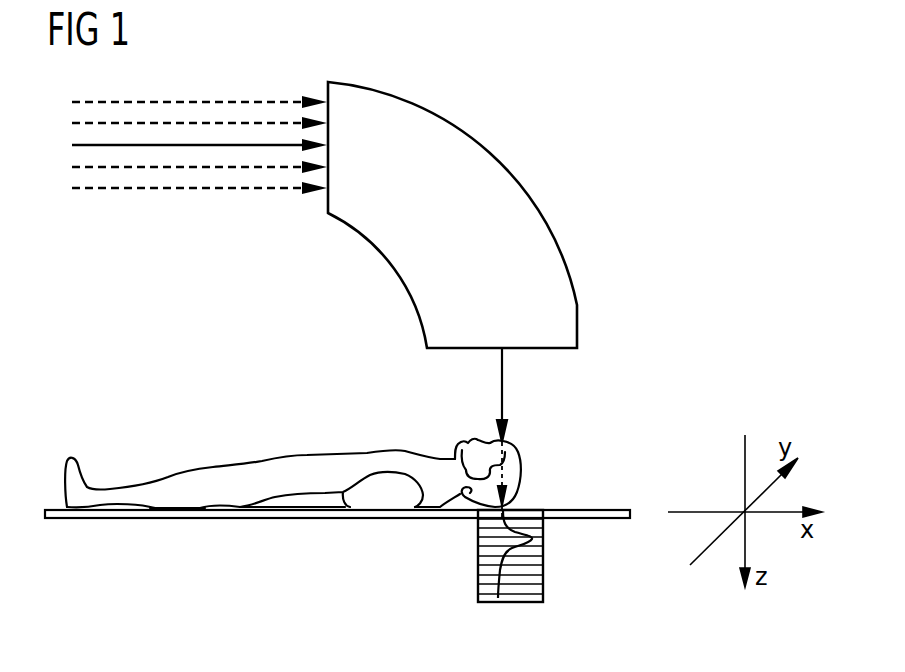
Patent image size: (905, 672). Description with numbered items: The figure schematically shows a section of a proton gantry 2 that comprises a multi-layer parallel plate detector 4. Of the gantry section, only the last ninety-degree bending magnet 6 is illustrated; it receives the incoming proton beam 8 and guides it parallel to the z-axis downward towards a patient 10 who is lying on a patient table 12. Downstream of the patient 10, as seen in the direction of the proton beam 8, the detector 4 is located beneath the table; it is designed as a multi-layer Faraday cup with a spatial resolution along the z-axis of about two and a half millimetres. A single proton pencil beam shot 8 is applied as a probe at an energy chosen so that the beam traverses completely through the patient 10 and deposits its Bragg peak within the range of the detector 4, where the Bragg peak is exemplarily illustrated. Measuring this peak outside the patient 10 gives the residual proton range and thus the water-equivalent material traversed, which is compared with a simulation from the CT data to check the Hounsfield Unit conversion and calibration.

The proton gantry 2 is at (704, 167).
The multi-layer parallel plate detector 4 is at (530, 556).
The last 90° bending magnet 6 is at (567, 321).
The proton beam 8 is at (207, 145).
The patient 10 is at (332, 464).
The patient table 12 is at (198, 519).